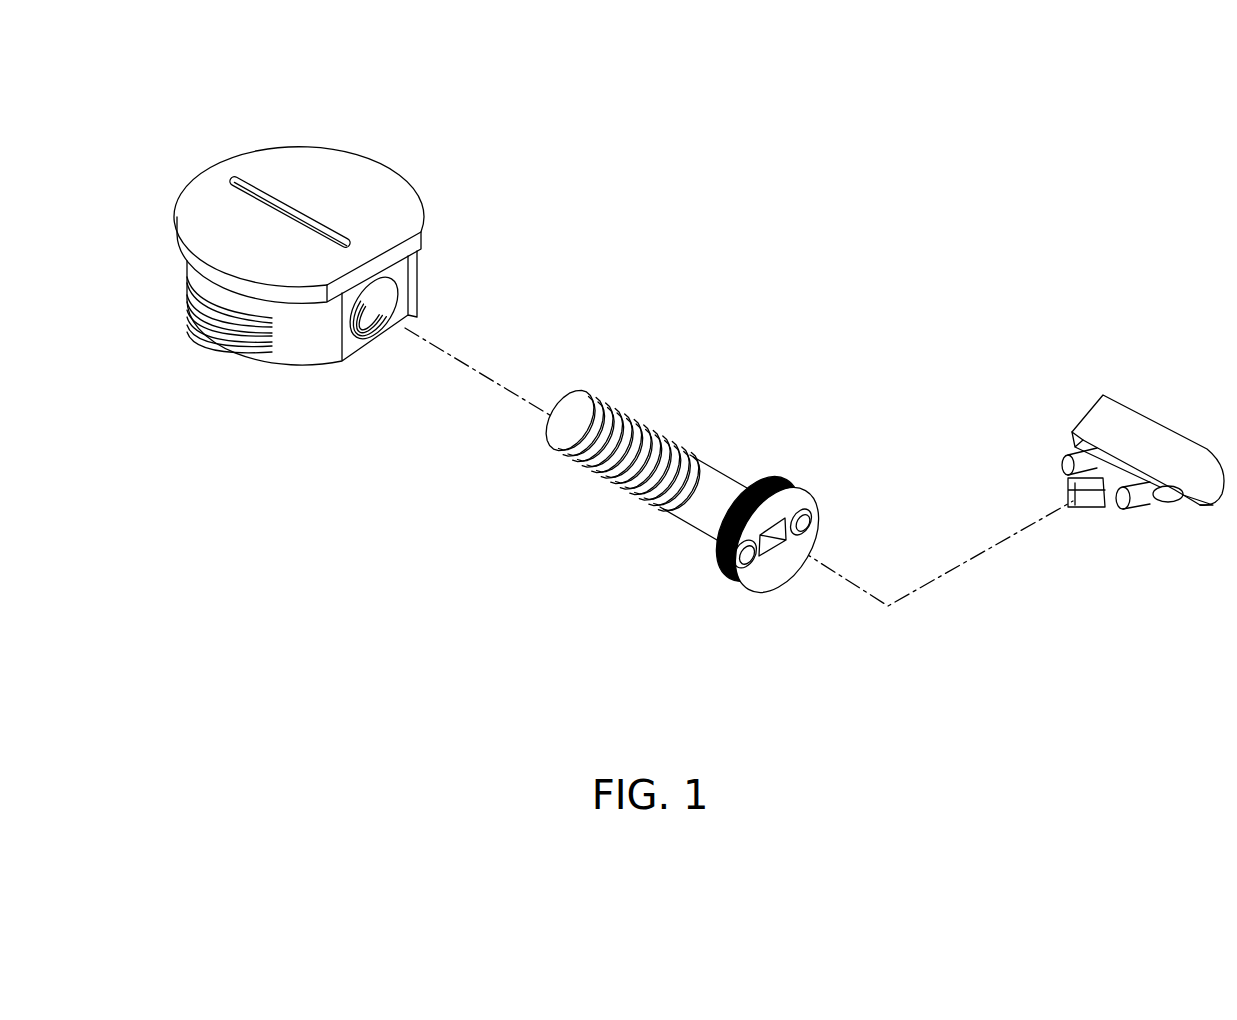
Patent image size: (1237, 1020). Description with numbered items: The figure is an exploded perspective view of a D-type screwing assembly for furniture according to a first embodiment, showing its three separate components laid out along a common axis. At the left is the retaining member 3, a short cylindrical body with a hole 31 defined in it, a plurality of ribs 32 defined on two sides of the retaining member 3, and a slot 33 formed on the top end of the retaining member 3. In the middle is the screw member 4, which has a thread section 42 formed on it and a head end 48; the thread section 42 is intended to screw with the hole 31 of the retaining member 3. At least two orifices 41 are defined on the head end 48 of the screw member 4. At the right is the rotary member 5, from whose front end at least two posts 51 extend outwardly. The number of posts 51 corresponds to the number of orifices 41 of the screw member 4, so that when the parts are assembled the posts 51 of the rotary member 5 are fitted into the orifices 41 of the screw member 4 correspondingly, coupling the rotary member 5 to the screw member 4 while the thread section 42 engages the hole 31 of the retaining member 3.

The retaining member 3 is at (380, 192).
The hole 31 is at (388, 290).
The ribs 32 is at (230, 322).
The slot 33 is at (270, 200).
The screw member 4 is at (523, 572).
The orifices 41 is at (800, 520).
The thread section 42 is at (652, 462).
The head end 48 is at (782, 503).
The rotary member 5 is at (1150, 437).
The posts 51 is at (1083, 508).